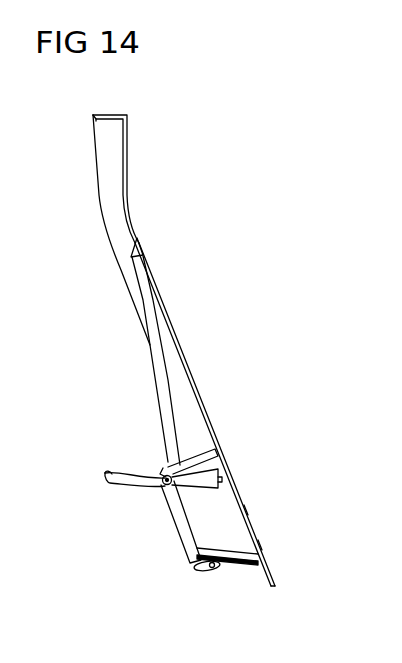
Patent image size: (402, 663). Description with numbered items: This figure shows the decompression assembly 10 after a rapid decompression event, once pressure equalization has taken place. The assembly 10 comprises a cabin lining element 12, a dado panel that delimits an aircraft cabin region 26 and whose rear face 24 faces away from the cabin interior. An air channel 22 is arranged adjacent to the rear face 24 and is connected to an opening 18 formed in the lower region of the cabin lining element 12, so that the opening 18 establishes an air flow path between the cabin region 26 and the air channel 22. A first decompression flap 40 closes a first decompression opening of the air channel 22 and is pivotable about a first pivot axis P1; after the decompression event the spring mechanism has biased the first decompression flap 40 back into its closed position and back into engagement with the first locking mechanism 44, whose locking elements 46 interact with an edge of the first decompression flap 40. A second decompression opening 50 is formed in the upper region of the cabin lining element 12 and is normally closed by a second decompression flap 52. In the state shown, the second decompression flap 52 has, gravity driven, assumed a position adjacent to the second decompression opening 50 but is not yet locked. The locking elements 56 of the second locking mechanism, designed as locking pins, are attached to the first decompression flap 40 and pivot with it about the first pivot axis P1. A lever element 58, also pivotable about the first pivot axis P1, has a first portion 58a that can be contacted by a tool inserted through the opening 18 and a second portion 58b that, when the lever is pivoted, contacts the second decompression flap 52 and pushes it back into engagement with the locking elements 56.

The decompression assembly 10 is at (278, 292).
The cabin lining element 12 is at (124, 140).
The rear face 24 is at (95, 147).
The second decompression opening 50 is at (192, 370).
The second decompression flap 52 is at (151, 360).
The locking element 56 is at (222, 452).
The lever element 58 is at (128, 478).
The first portion 58a is at (224, 479).
The second portion 58b is at (102, 473).
The first pivot axis P1 is at (162, 487).
The first decompression flap 40 is at (176, 537).
The locking element 46 is at (208, 576).
The air channel 22 is at (245, 568).
The opening 18 is at (262, 540).
The aircraft cabin region 26 is at (278, 503).
The first locking mechanism 44 is at (180, 586).